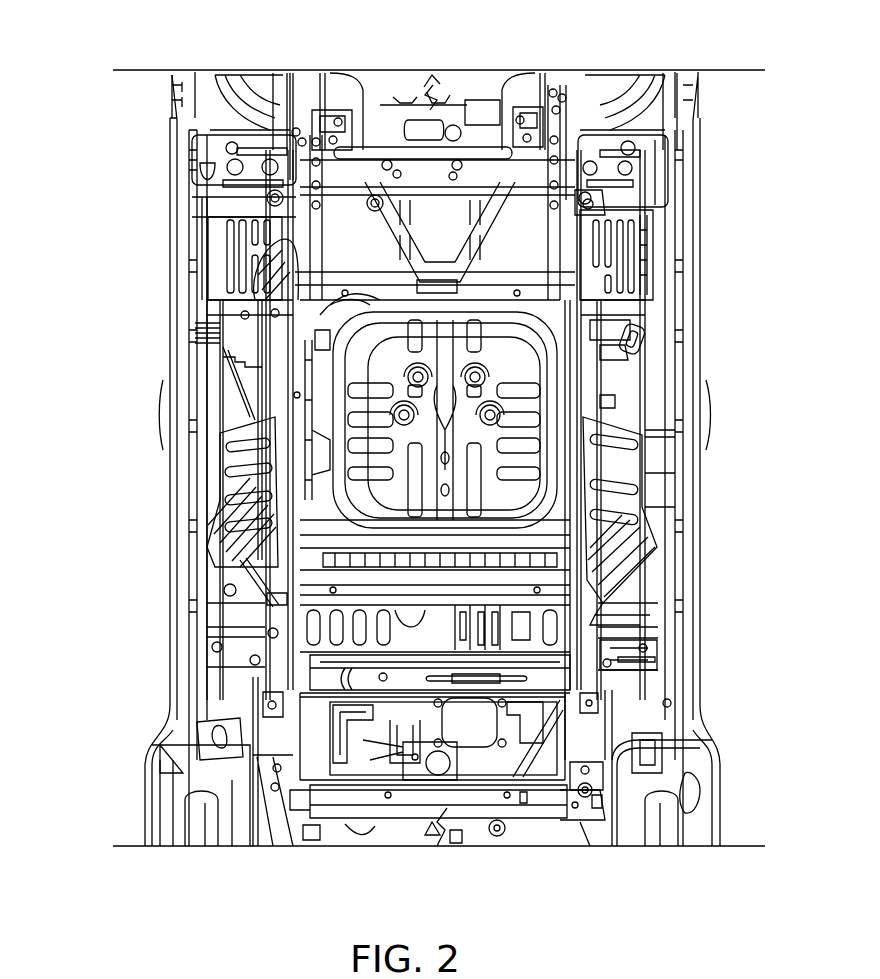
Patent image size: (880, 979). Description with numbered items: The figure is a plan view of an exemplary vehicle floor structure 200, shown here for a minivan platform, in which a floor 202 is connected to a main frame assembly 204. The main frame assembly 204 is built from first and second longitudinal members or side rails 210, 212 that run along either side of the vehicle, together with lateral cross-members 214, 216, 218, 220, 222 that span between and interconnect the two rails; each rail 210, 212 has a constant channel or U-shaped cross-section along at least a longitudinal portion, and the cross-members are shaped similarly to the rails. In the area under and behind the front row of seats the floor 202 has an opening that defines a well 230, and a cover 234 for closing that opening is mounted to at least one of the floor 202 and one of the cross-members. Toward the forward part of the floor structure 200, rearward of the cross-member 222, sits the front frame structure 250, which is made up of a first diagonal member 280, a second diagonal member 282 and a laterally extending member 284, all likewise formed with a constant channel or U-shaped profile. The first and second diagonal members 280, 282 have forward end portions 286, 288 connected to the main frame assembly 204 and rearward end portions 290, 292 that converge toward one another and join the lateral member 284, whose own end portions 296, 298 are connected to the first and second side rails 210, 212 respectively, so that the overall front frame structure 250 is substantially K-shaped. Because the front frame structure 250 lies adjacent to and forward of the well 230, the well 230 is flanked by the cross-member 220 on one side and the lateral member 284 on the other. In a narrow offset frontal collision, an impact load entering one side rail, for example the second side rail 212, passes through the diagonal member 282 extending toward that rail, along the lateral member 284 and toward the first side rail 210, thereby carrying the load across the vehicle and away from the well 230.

The vehicle floor structure 200 is at (90, 150).
The floor 202 is at (433, 85).
The main frame assembly 204 is at (475, 122).
The first longitudinal member or rail 210 is at (282, 372).
The second longitudinal member or rail 212 is at (588, 410).
The lateral cross-member 214 is at (499, 805).
The lateral cross-member 216 is at (555, 683).
The lateral cross-member 218 is at (565, 592).
The lateral cross-member 220 is at (560, 512).
The lateral cross-member 222 is at (427, 160).
The well 230 is at (300, 470).
The cover 234 is at (568, 470).
The front frame structure 250 is at (392, 136).
The first diagonal member 280 is at (370, 212).
The second diagonal member 282 is at (583, 207).
The laterally extending member 284 is at (552, 292).
The forward end portion 286 is at (320, 172).
The forward end portion 288 is at (658, 162).
The rearward end portion 290 is at (320, 262).
The rearward end portion 292 is at (630, 248).
The end portion 296 is at (290, 320).
The end portion 298 is at (600, 310).